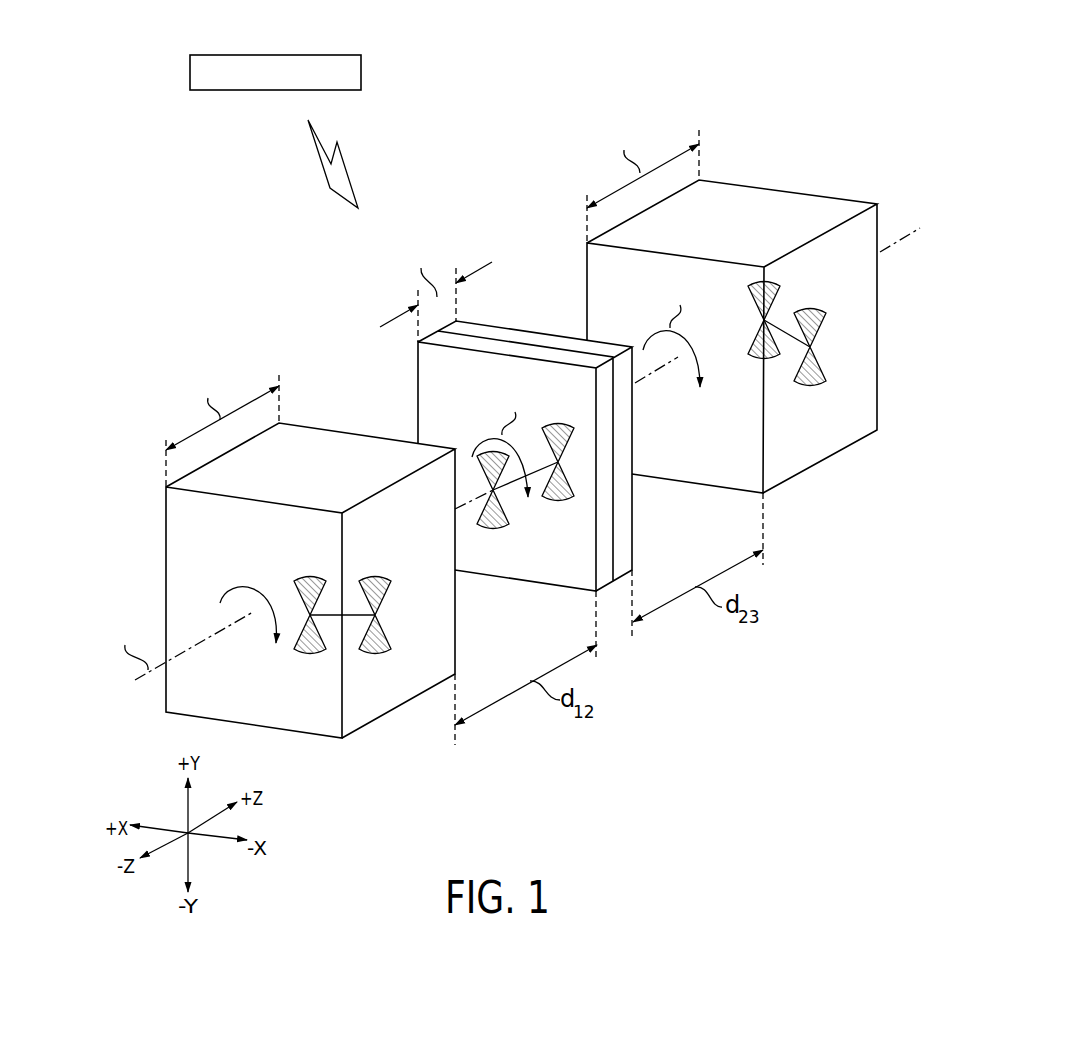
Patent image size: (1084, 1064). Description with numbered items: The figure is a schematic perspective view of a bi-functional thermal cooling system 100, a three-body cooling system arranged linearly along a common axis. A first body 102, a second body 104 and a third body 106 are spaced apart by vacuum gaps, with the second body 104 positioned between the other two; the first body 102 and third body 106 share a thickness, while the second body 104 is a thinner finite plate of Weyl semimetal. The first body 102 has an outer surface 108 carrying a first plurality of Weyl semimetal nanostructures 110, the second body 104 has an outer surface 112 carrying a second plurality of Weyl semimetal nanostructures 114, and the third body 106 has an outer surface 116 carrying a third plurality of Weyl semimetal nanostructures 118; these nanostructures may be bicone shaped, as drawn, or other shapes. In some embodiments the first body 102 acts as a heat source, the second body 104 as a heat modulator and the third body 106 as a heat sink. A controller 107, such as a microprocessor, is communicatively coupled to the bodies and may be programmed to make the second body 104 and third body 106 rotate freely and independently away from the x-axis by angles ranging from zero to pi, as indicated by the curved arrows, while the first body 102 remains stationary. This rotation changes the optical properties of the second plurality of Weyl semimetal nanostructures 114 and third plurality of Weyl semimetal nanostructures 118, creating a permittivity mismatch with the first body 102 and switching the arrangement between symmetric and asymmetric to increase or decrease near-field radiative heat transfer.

The bi-functional thermal cooling system 100 is at (92, 47).
The first body 102 is at (261, 553).
The second body 104 is at (506, 401).
The third body 106 is at (753, 290).
The controller 107 is at (362, 73).
The outer surface 108 is at (398, 702).
The first plurality of Weyl semimetal nanostructures 110 is at (312, 646).
The outer surface 112 is at (522, 569).
The second plurality of Weyl semimetal nanostructures 114 is at (560, 501).
The outer surface 116 is at (858, 284).
The third plurality of Weyl semimetal nanostructures 118 is at (808, 381).